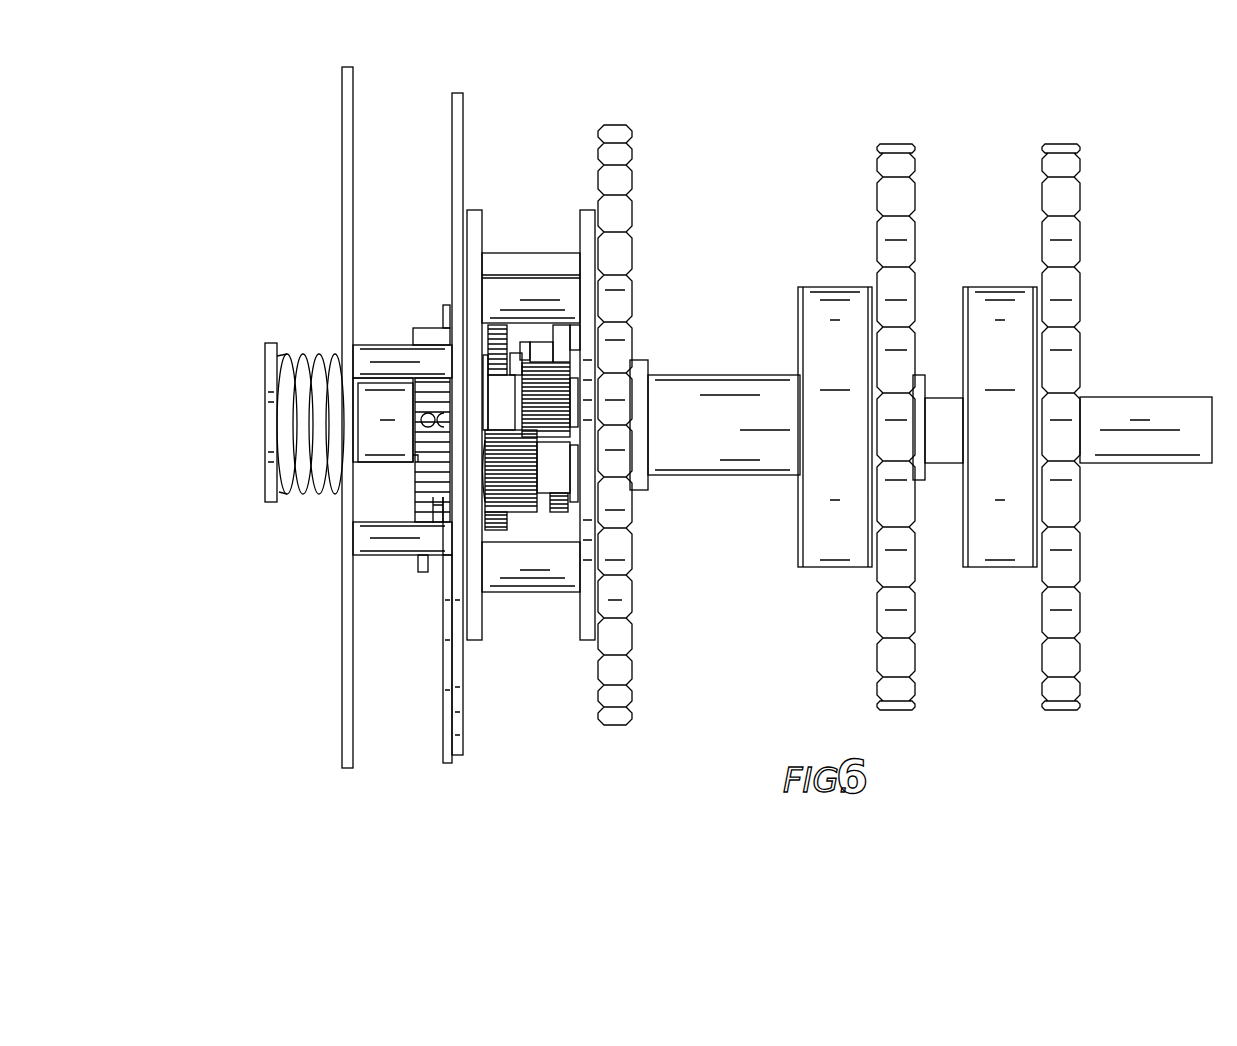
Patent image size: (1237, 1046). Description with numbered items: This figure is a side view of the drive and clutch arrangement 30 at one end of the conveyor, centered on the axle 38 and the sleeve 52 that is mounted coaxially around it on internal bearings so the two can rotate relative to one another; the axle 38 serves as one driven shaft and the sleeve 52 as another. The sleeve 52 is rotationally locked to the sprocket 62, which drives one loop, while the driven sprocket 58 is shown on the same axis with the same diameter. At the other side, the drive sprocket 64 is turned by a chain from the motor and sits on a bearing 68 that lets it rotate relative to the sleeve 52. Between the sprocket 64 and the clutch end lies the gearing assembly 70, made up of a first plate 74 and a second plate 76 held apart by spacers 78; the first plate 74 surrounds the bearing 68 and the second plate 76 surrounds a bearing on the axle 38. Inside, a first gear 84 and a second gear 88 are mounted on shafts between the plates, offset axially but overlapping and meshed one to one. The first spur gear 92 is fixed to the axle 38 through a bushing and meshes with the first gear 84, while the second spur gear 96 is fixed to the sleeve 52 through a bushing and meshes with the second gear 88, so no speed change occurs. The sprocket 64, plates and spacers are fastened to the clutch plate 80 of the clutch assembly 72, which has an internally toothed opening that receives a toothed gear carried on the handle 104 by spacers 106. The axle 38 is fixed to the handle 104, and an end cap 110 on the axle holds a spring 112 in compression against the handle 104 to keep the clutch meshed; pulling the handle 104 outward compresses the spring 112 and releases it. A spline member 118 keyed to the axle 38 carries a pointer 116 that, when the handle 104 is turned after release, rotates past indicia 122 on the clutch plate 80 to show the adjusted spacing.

The drive assembly 30 is at (292, 627).
The axle 38 is at (383, 457).
The sleeve 52 is at (688, 380).
The driven sprocket 58 is at (1040, 173).
The sprocket 62 is at (893, 195).
The drive sprocket 64 is at (624, 132).
The bearing 68 is at (640, 360).
The gearing assembly 70 is at (562, 160).
The clutch assembly 72 is at (416, 170).
The first plate 74 is at (586, 207).
The second plate 76 is at (473, 207).
The spacers 78 is at (503, 263).
The clutch plate 80 is at (458, 90).
The first gear 84 is at (518, 500).
The second gear 88 is at (583, 417).
The first spur gear 92 is at (496, 528).
The second spur gear 96 is at (560, 530).
The handle 104 is at (347, 153).
The spacers 106 is at (382, 355).
The end cap 110 is at (271, 343).
The spring 112 is at (312, 347).
The pointer 116 is at (425, 572).
The spline member 118 is at (447, 565).
The indicia 122 is at (448, 727).